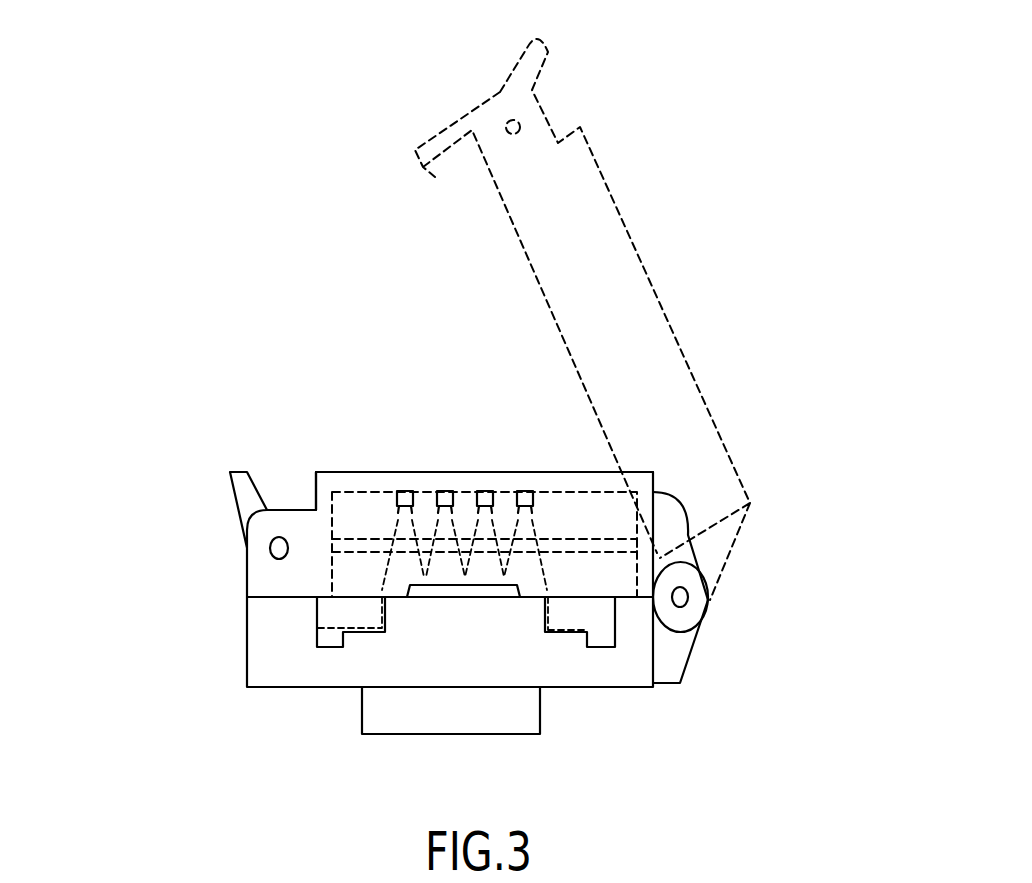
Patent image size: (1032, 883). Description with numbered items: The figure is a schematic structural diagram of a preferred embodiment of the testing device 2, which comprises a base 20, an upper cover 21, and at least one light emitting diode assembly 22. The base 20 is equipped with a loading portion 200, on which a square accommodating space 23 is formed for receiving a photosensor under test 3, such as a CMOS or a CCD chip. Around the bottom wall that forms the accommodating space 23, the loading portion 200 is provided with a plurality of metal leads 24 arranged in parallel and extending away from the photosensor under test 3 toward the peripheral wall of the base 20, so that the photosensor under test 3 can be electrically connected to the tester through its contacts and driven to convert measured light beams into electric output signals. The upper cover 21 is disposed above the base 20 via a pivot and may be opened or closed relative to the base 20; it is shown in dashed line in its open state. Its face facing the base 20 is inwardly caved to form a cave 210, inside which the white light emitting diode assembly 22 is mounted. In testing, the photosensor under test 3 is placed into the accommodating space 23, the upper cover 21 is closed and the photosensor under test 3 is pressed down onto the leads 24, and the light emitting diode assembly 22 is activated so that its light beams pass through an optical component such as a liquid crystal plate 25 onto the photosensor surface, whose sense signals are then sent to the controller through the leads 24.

The testing device 2 is at (378, 262).
The base 20 is at (635, 672).
The loading portion 200 is at (342, 596).
The upper cover 21 is at (325, 485).
The cave 210 is at (370, 507).
The light emitting diode assembly 22 is at (526, 491).
The accommodating space 23 is at (410, 580).
The metal leads 24 is at (338, 643).
The liquid crystal plate 25 is at (525, 548).
The photosensor under test 3 is at (468, 598).